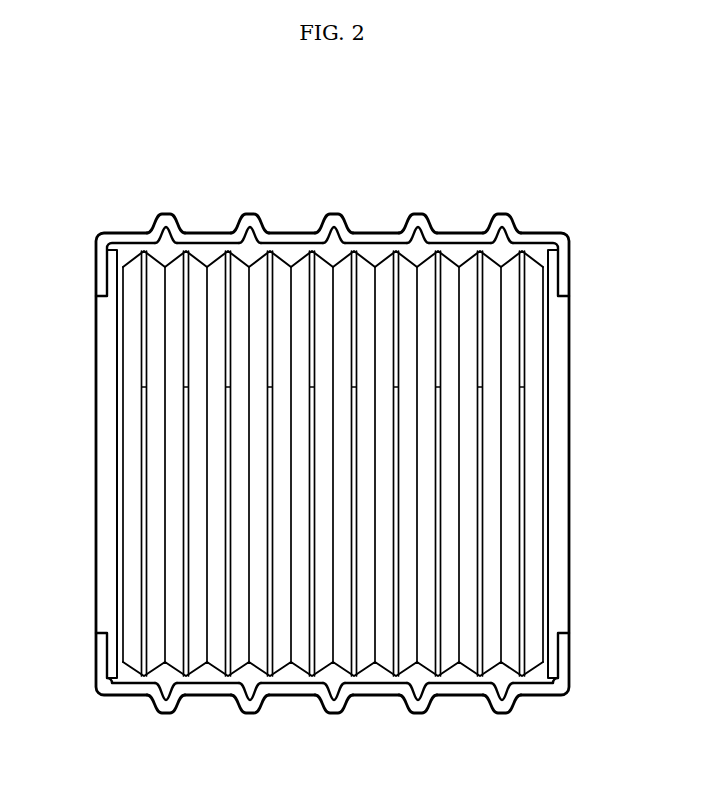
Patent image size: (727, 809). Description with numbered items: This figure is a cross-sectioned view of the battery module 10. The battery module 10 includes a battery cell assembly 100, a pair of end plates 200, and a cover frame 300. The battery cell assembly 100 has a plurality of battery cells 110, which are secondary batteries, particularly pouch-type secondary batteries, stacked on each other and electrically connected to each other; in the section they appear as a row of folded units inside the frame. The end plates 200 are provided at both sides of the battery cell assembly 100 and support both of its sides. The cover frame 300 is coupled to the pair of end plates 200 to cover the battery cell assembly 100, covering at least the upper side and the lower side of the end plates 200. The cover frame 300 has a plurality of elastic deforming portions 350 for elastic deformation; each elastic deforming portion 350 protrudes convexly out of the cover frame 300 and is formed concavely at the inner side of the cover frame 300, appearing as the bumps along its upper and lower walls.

The battery module 10 is at (141, 146).
The battery cell assembly 100 is at (295, 685).
The battery cell 110 is at (385, 653).
The end plate 200 is at (96, 432).
The cover frame 300 is at (542, 231).
The elastic deforming portion 350 is at (250, 213).